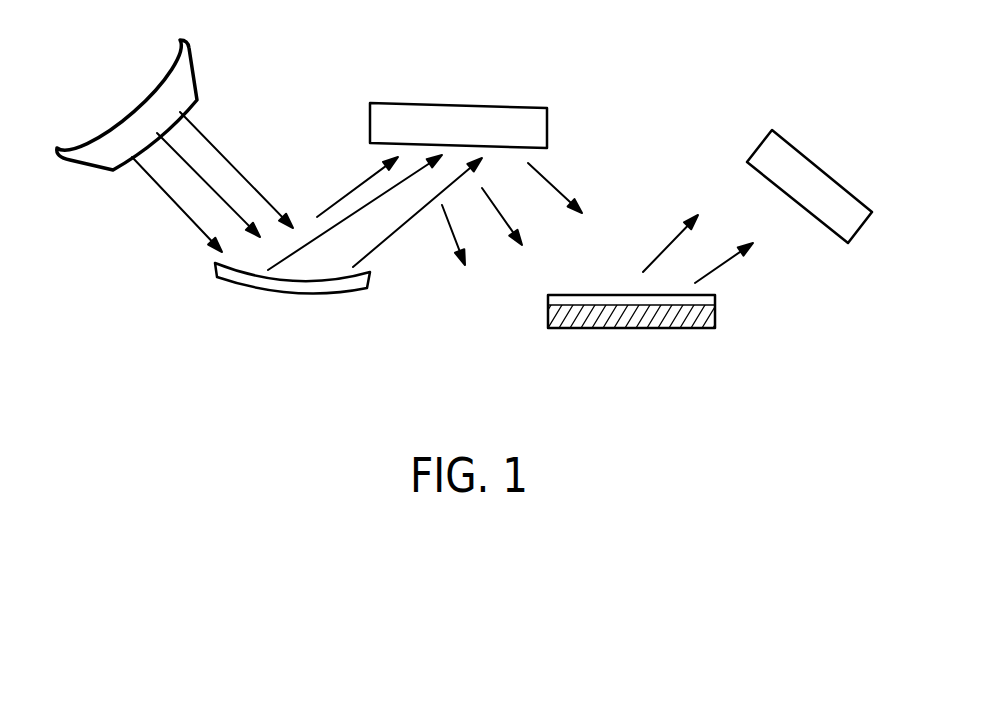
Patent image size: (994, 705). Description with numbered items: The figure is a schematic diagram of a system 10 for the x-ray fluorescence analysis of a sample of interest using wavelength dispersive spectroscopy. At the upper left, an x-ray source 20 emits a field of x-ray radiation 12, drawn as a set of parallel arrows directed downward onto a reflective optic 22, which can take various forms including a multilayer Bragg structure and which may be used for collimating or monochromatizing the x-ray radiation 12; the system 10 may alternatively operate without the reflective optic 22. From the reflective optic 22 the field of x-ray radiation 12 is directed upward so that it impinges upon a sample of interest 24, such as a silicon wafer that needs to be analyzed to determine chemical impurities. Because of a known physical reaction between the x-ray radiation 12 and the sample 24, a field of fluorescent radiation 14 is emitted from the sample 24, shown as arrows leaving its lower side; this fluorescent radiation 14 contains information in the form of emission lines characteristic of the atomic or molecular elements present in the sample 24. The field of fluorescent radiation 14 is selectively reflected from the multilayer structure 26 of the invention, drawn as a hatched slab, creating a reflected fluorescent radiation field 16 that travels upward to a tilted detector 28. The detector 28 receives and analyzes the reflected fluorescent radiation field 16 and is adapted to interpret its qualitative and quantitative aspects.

The system 10 is at (237, 336).
The field of x-ray radiation 12 is at (254, 120).
The field of fluorescent radiation 14 is at (553, 185).
The reflected fluorescent radiation field 16 is at (730, 260).
The x-ray source 20 is at (192, 63).
The reflective optic 22 is at (302, 292).
The sample of interest 24 is at (458, 103).
The multilayer structure 26 is at (613, 328).
The detector 28 is at (810, 155).